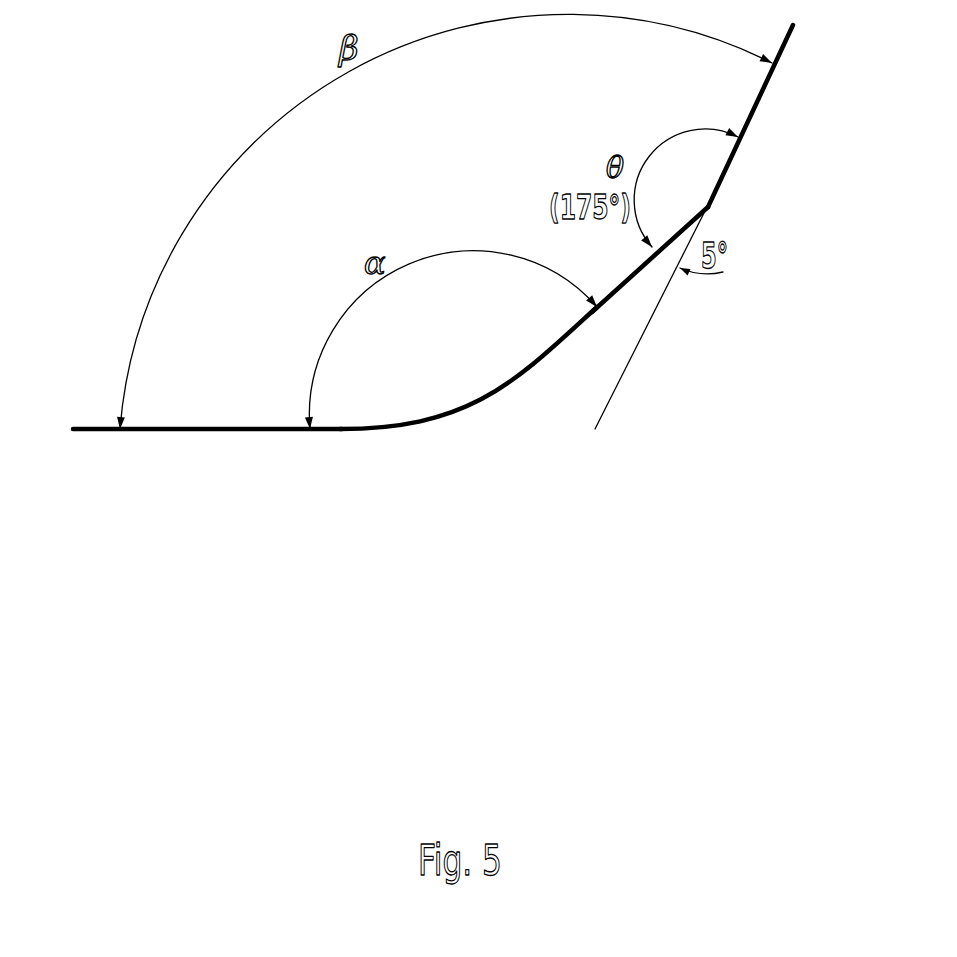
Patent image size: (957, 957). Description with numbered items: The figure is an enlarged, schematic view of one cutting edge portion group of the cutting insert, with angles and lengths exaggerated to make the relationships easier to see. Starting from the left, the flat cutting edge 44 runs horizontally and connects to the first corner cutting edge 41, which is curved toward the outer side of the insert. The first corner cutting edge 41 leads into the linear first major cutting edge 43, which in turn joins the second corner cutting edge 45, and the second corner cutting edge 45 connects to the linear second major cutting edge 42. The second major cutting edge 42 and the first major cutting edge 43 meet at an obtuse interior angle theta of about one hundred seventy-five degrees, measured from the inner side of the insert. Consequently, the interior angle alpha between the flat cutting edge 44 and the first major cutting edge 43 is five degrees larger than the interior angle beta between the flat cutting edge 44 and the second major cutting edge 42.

The first corner cutting edge 41 is at (500, 387).
The second major cutting edge 42 is at (753, 108).
The first major cutting edge 43 is at (630, 277).
The flat cutting edge 44 is at (200, 431).
The second corner cutting edge 45 is at (708, 207).